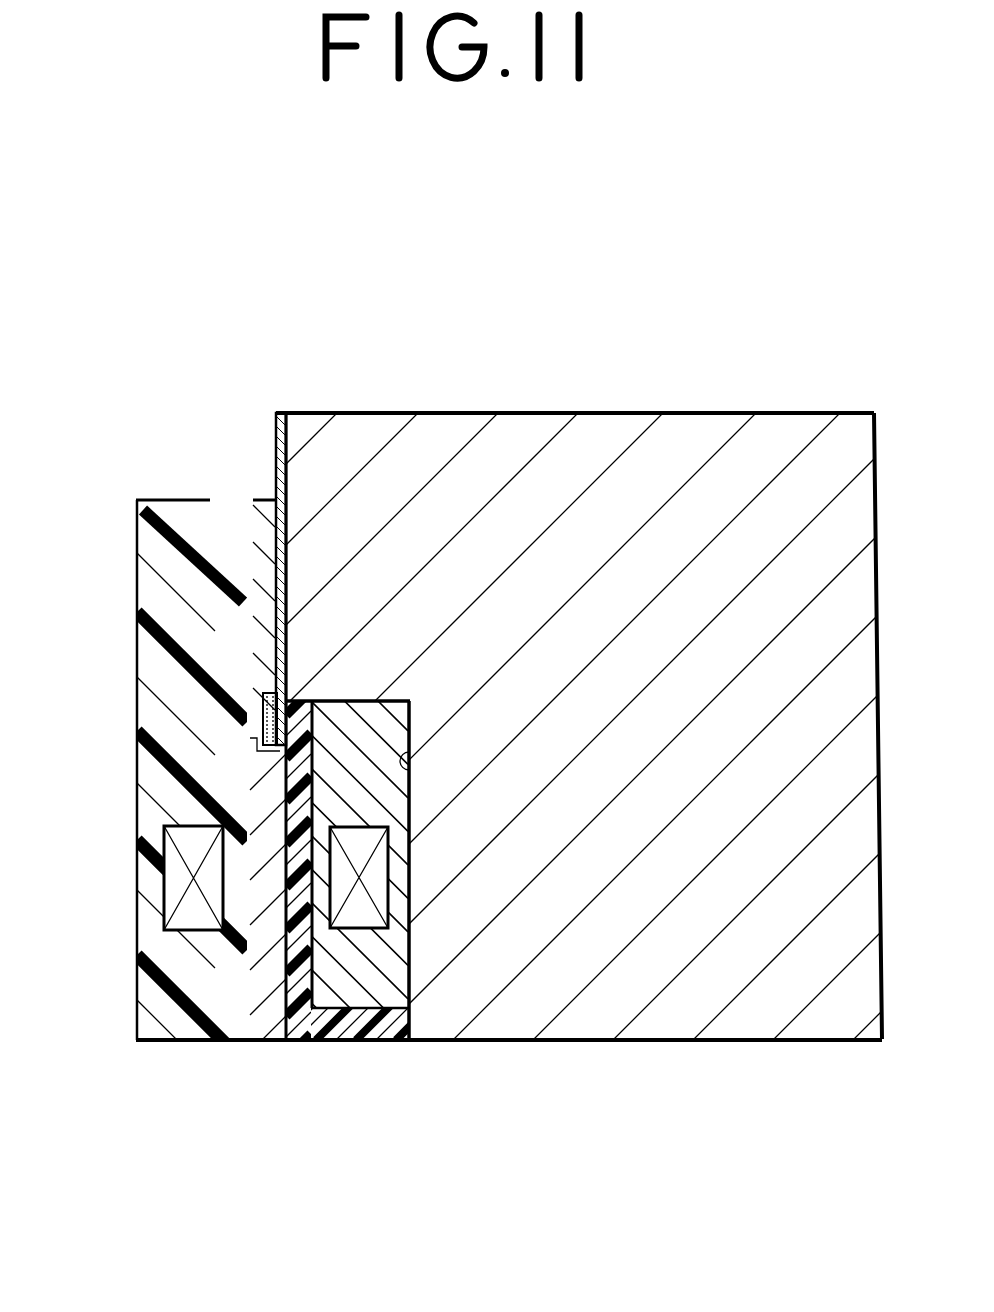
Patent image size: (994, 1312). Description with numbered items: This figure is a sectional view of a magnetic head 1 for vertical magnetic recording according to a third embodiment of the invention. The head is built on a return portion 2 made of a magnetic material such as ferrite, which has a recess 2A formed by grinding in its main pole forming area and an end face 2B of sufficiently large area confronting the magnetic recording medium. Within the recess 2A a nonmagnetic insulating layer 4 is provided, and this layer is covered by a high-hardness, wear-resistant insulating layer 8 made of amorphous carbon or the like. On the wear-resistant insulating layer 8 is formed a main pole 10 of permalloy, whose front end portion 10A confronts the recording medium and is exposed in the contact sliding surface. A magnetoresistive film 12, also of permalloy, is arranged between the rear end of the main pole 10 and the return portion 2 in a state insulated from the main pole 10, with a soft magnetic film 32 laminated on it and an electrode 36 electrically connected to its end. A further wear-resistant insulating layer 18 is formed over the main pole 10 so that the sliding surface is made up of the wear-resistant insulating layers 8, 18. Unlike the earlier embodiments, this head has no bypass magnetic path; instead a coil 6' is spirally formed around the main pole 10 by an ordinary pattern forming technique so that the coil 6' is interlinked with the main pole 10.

The magnetic head 1 is at (205, 427).
The return portion 2 is at (718, 412).
The recess 2A is at (411, 779).
The end face 2B is at (673, 1041).
The nonmagnetic insulating layer 4 is at (377, 700).
The coil 6' is at (264, 878).
The wear-resistant insulating layer 8 is at (347, 1041).
The main pole 10 is at (222, 793).
The front end portion 10A is at (283, 1042).
The magnetoresistive film 12 is at (212, 663).
The wear-resistant insulating layer 18 is at (160, 1000).
The soft magnetic film 32 is at (262, 707).
The electrode 36 is at (275, 413).